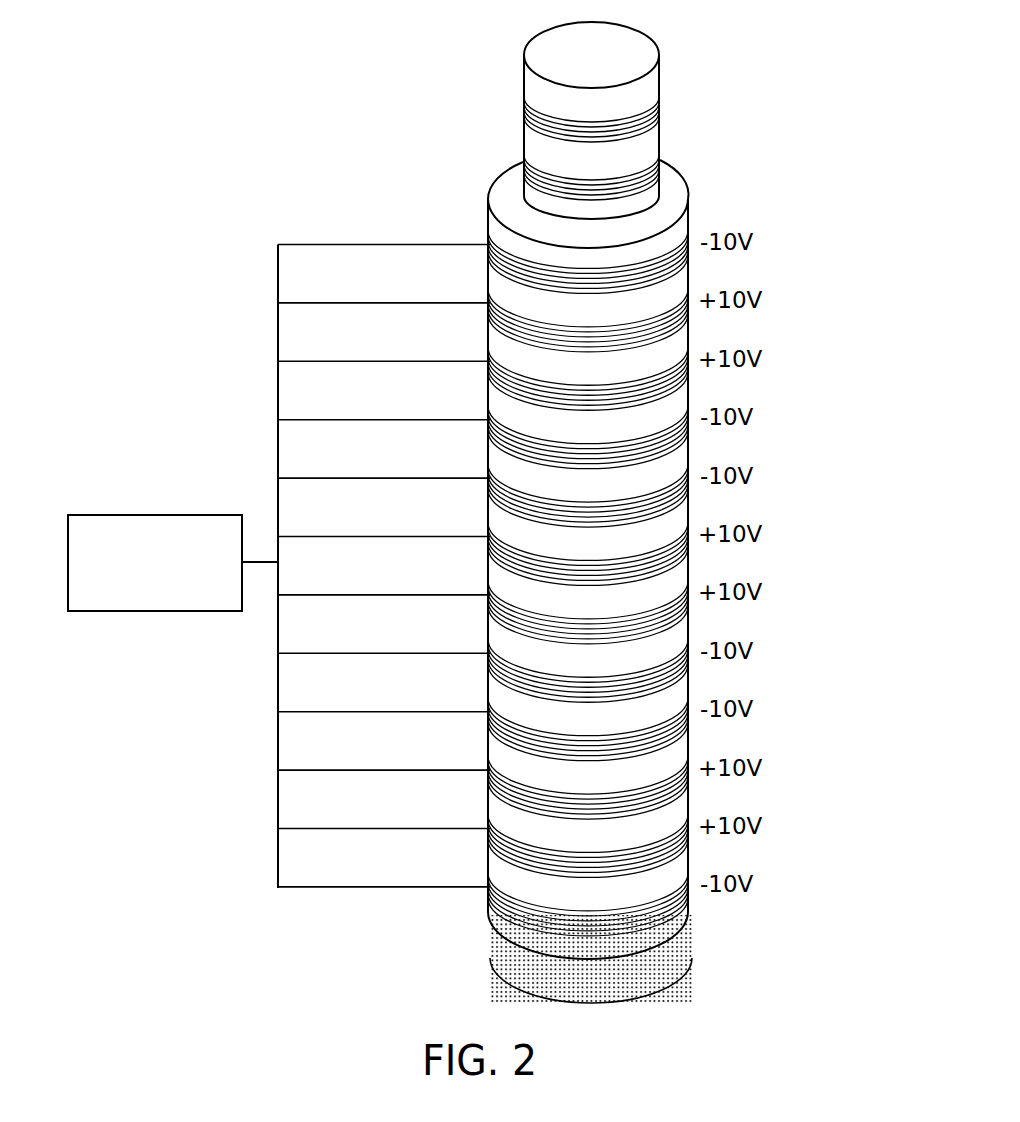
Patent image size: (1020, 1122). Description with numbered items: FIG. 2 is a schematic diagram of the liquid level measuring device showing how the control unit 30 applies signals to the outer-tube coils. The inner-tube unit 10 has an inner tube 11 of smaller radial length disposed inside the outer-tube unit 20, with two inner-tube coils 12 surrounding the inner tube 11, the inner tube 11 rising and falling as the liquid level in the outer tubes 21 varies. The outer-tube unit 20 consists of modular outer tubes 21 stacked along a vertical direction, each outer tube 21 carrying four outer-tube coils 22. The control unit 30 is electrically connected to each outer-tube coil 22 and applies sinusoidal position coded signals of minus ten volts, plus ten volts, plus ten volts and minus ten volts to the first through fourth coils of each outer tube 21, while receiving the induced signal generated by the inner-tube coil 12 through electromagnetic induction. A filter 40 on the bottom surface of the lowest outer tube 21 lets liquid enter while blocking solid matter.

The inner-tube unit 10 is at (542, 47).
The inner tube 11 is at (646, 33).
The inner-tube coil 12 is at (659, 110).
The outer-tube unit 20 is at (505, 185).
The outer tube 21 is at (680, 168).
The outer-tube coil 22 is at (488, 235).
The control unit 30 is at (170, 515).
The filter 40 is at (670, 957).